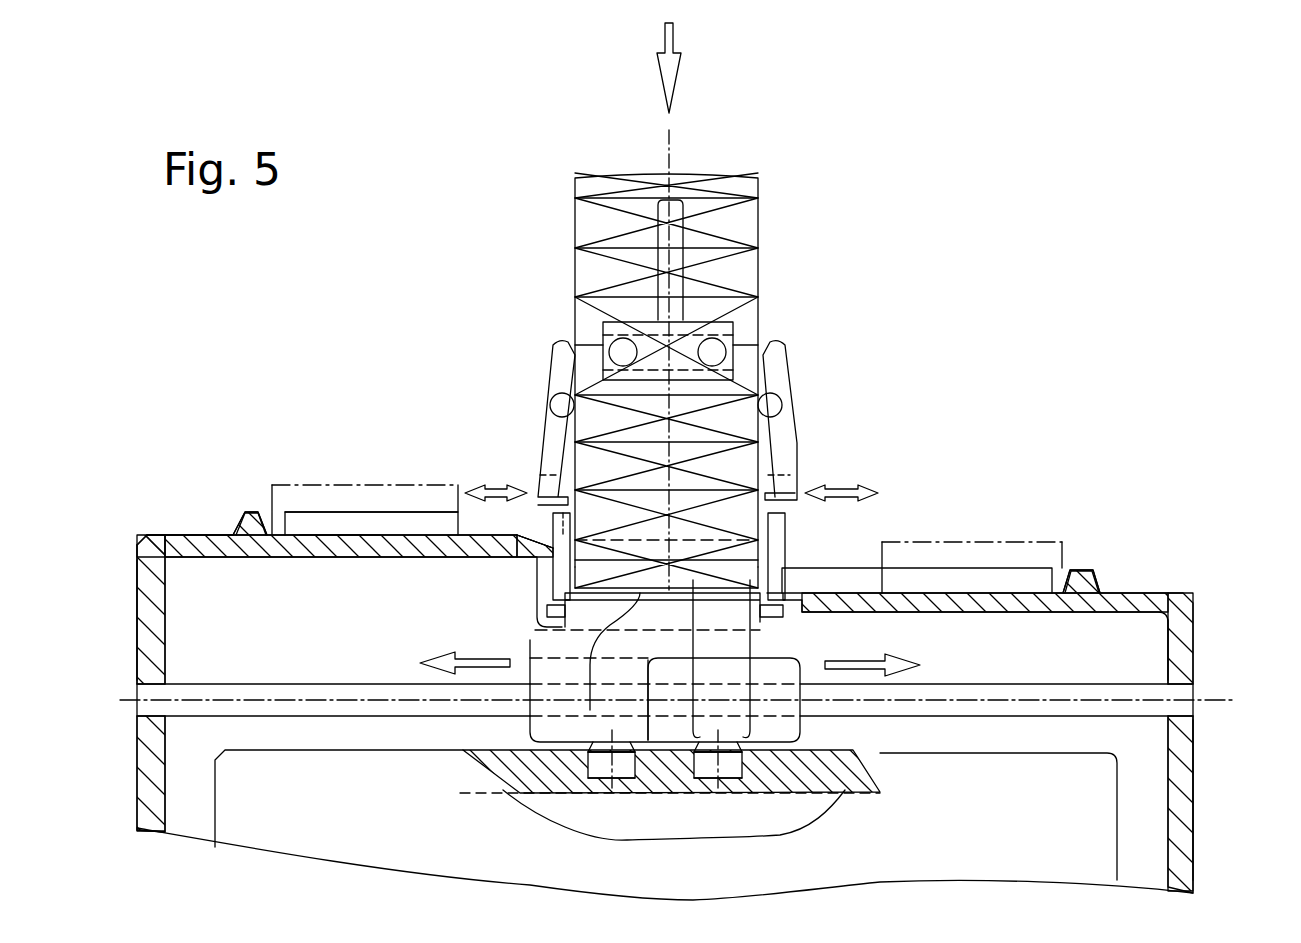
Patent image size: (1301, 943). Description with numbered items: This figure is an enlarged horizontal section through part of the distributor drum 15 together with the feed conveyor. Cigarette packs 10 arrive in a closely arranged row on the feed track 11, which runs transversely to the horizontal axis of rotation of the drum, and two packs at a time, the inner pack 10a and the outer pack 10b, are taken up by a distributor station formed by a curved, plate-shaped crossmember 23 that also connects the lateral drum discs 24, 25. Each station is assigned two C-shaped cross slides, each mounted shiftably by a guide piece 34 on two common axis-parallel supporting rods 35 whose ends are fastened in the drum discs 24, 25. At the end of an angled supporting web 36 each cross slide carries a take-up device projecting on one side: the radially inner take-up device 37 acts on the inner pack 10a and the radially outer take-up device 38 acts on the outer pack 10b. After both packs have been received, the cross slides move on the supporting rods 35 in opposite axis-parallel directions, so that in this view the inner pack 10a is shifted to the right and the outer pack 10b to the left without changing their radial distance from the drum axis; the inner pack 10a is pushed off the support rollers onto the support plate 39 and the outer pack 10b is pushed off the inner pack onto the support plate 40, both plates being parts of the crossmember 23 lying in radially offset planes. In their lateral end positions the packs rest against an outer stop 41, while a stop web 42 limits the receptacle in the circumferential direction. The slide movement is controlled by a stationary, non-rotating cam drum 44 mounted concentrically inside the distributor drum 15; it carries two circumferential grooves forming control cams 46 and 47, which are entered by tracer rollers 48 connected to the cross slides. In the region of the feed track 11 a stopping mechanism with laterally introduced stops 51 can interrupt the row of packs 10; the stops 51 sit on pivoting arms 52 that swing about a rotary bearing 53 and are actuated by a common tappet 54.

The packs 10 is at (607, 268).
The inner pack 10a is at (847, 565).
The outer pack 10b is at (312, 487).
The feed track 11 is at (748, 145).
The distributor drum 15 is at (150, 485).
The crossmember 23 is at (205, 480).
The drum disc 24 is at (137, 600).
The drum disc 25 is at (1188, 752).
The guide piece 34 is at (550, 723).
The supporting rods 35 is at (1105, 695).
The angled supporting web 36 is at (573, 641).
The radially inner take-up device 37 is at (520, 533).
The radially outer take-up device 38 is at (690, 515).
The support plate 39 is at (993, 607).
The support plate 40 is at (342, 546).
The outer stop 41 is at (260, 523).
The stop web 42 is at (387, 511).
The cam drum 44 is at (243, 795).
The control cam 46 is at (595, 775).
The control cam 47 is at (708, 777).
The tracer rollers 48 is at (627, 757).
The stops 51 is at (565, 527).
The pivoting arms 52 is at (767, 370).
The rotary bearing 53 is at (767, 405).
The tappet 54 is at (682, 206).